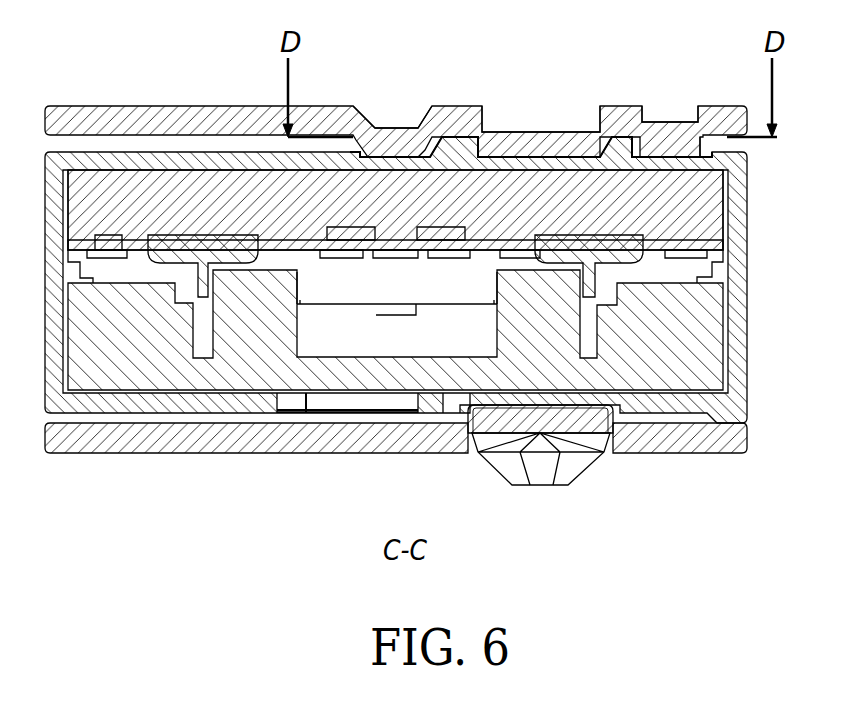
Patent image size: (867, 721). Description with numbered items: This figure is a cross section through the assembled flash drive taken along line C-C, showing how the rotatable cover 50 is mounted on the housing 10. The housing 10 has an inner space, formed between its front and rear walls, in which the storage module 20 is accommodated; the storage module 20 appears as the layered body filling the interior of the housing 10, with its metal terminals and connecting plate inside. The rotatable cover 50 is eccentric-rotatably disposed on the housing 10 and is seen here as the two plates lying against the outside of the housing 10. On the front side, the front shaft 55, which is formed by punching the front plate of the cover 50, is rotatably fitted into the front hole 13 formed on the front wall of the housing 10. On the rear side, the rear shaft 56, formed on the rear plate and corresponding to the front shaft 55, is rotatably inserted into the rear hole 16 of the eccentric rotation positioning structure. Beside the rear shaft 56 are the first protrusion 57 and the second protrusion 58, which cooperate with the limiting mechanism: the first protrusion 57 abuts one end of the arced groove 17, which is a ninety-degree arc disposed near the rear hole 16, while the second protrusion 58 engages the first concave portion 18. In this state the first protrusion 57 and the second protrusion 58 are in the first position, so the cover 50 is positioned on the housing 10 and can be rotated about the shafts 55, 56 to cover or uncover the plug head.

The housing 10 is at (748, 276).
The front hole 13 is at (590, 403).
The rear hole 16 is at (563, 163).
The arced groove 17 is at (421, 153).
The first concave portion 18 is at (689, 160).
The storage module 20 is at (147, 202).
The rotatable cover 50 is at (173, 456).
The front shaft 55 is at (588, 418).
The rear shaft 56 is at (537, 140).
The first protrusion 57 is at (398, 143).
The second protrusion 58 is at (668, 145).